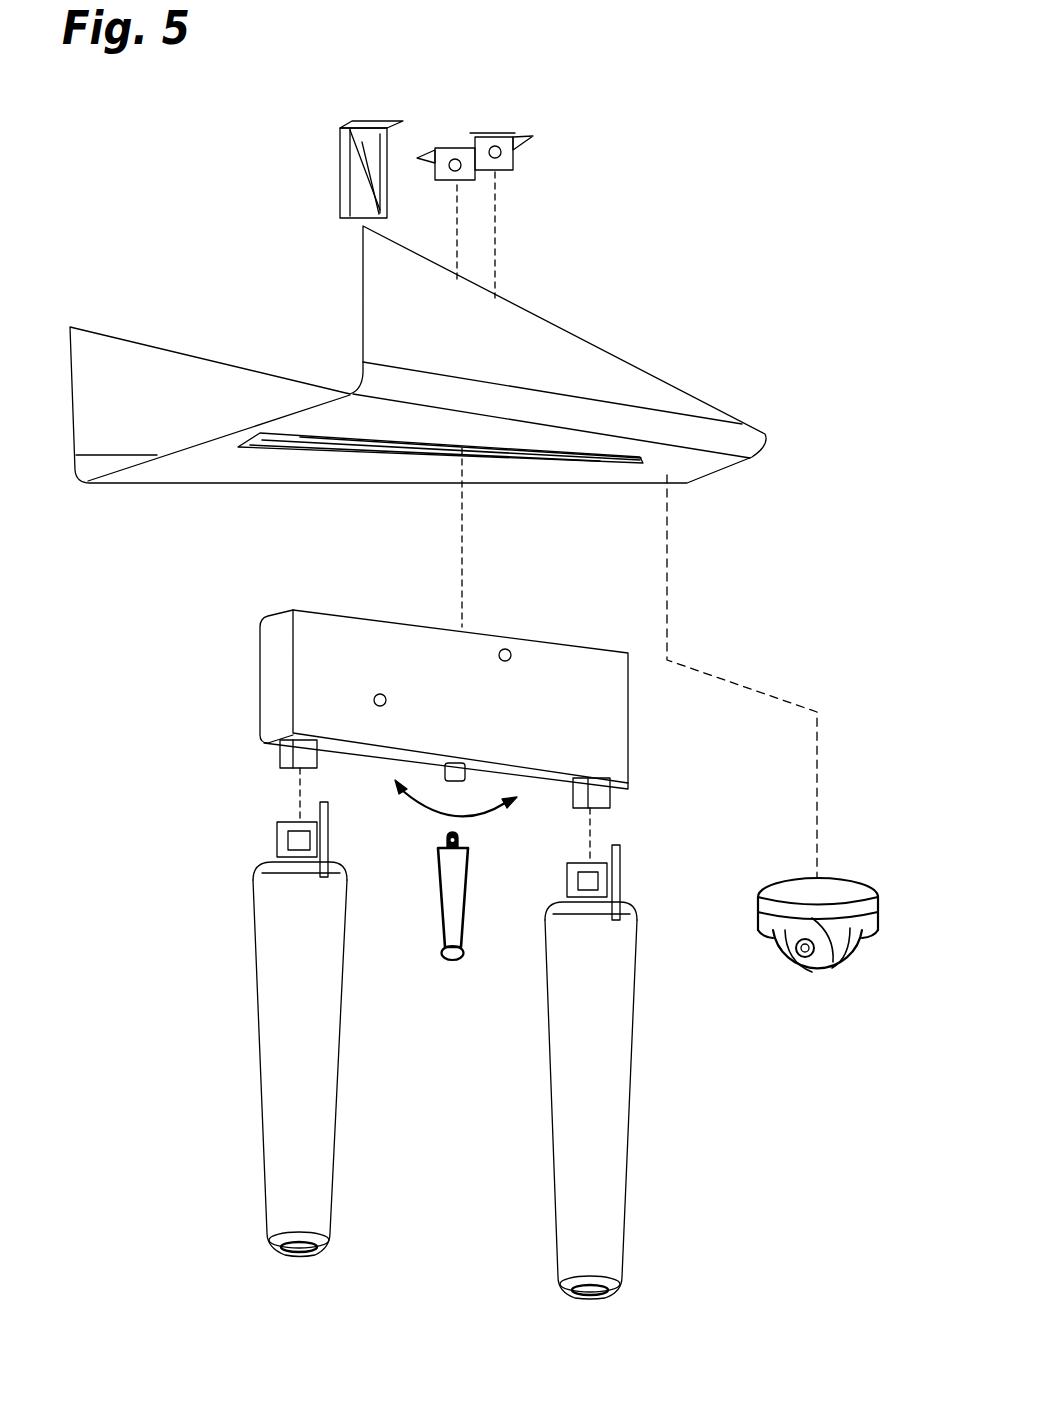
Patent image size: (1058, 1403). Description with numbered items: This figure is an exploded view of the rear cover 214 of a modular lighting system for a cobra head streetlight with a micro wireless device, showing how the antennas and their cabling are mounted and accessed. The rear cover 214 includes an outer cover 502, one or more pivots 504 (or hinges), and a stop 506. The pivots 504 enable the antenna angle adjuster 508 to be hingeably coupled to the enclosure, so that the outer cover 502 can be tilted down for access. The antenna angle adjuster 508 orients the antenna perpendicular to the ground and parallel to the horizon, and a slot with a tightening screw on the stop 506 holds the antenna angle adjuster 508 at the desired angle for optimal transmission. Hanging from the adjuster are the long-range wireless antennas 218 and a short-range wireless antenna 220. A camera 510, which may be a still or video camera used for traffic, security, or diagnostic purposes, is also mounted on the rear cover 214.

The rear cover 214 is at (138, 163).
The stop 506 is at (358, 124).
The pivots 504 is at (520, 133).
The outer cover 502 is at (682, 487).
The antenna angle adjuster 508 is at (290, 610).
The short-range wireless antenna 220 is at (455, 963).
The long-range wireless antennas 218 is at (260, 1056).
The camera 510 is at (820, 977).